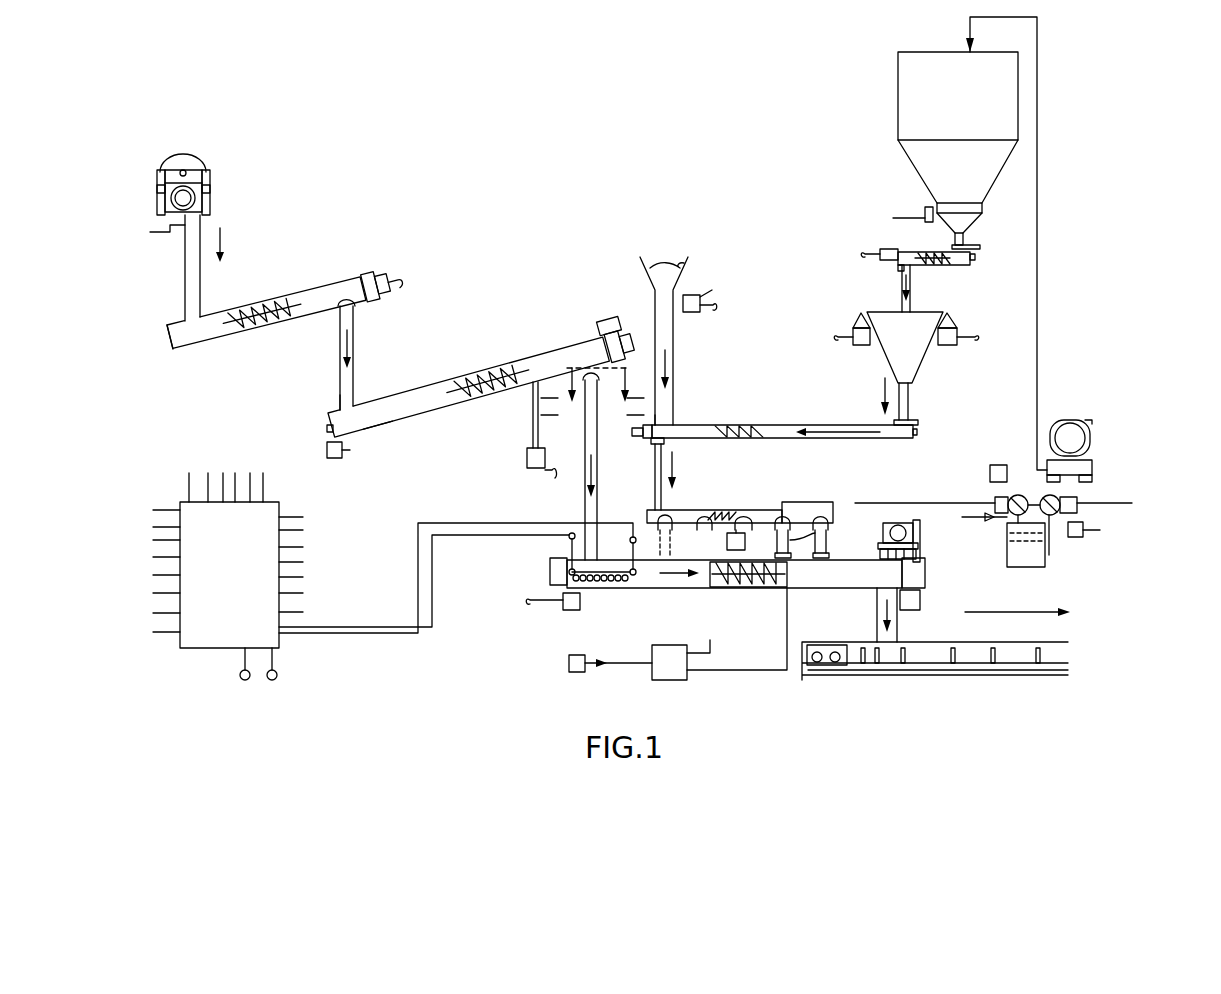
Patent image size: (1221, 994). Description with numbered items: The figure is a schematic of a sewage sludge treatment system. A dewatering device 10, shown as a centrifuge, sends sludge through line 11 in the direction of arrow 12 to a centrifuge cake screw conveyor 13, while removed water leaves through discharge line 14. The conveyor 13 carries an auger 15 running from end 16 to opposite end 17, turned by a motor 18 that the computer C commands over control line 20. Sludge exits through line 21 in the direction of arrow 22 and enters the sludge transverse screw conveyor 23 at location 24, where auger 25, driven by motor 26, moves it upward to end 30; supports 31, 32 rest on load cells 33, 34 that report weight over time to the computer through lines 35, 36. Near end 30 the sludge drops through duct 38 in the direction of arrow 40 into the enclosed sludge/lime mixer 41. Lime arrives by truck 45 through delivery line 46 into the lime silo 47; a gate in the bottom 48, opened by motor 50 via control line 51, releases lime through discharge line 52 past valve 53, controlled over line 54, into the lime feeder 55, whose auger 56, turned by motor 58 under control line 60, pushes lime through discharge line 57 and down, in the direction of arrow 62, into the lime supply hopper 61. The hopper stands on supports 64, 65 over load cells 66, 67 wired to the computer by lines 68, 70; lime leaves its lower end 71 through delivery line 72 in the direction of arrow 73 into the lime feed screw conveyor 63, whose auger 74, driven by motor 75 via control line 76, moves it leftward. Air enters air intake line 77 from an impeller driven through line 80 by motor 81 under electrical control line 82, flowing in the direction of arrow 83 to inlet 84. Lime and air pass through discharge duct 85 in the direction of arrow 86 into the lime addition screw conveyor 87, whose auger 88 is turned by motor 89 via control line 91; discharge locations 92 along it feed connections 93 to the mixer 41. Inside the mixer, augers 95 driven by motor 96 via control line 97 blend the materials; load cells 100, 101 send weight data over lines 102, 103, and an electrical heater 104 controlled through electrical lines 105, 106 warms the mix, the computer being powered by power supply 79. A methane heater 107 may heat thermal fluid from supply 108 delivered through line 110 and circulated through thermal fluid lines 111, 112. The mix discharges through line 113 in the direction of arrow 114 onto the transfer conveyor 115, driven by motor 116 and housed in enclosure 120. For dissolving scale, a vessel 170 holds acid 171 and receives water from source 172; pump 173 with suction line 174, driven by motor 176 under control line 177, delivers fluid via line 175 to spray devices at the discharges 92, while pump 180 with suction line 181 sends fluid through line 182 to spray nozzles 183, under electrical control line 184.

The dewatering device 10 is at (218, 167).
The line 11 is at (204, 234).
The arrow 12 is at (226, 240).
The centrifuge cake screw conveyor 13 is at (265, 314).
The discharge line 14 is at (152, 232).
The auger 15 is at (262, 313).
The end 16 is at (166, 330).
The opposite end 17 is at (370, 287).
The motor 18 is at (382, 284).
The control line 20 is at (395, 284).
The line 21 is at (355, 327).
The arrow 22 is at (350, 350).
The sludge transverse screw conveyor 23 is at (472, 366).
The location 24 is at (343, 400).
The auger 25 is at (487, 381).
The motor 26 is at (609, 325).
The end 30 is at (620, 345).
The support 31 is at (378, 425).
The support 32 is at (533, 410).
The load cell 33 is at (343, 455).
The load cell 34 is at (528, 455).
The electrical information communication line 35 is at (333, 442).
The electrical information communication line 36 is at (540, 476).
The duct 38 is at (583, 492).
The arrow 40 is at (598, 470).
The sludge/lime mixer 41 is at (620, 588).
The truck 45 is at (1070, 420).
The delivery line 46 is at (1037, 290).
The lime silo 47 is at (898, 90).
The bottom 48 is at (975, 216).
The motor 50 is at (928, 206).
The control line 51 is at (895, 216).
The discharge line 52 is at (965, 238).
The valve 53 is at (980, 249).
The control line 54 is at (980, 247).
The lime feeder 55 is at (935, 256).
The auger 56 is at (900, 266).
The lime feeder discharge line 57 is at (902, 282).
The motor 58 is at (882, 255).
The control line 60 is at (862, 252).
The lime supply hopper 61 is at (922, 312).
The arrow 62 is at (902, 296).
The lime feed screw conveyor 63 is at (774, 420).
The support 64 is at (957, 320).
The support 65 is at (858, 320).
The load cell 66 is at (985, 334).
The load cell 67 is at (855, 343).
The electrical information delivery line 68 is at (985, 340).
The electrical information delivery line 70 is at (836, 338).
The lower end 71 is at (910, 390).
The delivery line 72 is at (920, 422).
The arrow 73 is at (880, 392).
The auger 74 is at (752, 440).
The motor 75 is at (630, 368).
The control line 76 is at (645, 438).
The air intake line 77 is at (673, 352).
The power supply 79 is at (240, 675).
The line 80 is at (702, 296).
The motor 81 is at (700, 300).
The electrical control line 82 is at (716, 306).
The arrow 83 is at (670, 366).
The inlet 84 is at (675, 420).
The discharge duct 85 is at (667, 443).
The arrow 86 is at (668, 463).
The lime addition screw conveyor 87 is at (658, 510).
The auger 88 is at (712, 520).
The motor 89 is at (745, 541).
The control line 91 is at (727, 540).
The discharge locations 92 is at (647, 516).
The connections 93 is at (743, 617).
The augers 95 is at (788, 588).
The motor 96 is at (921, 530).
The control line 97 is at (886, 503).
The load cell 100 is at (563, 608).
The load cell 101 is at (910, 610).
The electrical information delivery line 102 is at (527, 600).
The electrical information delivery line 103 is at (920, 598).
The electrical heater 104 is at (563, 560).
The electrical line 105 is at (418, 523).
The electrical line 106 is at (420, 590).
The methane heater 107 is at (668, 680).
The thermal fluid supply 108 is at (569, 663).
The delivery line 110 is at (595, 657).
The thermal fluid line 111 is at (712, 648).
The thermal fluid line 112 is at (775, 670).
The discharge line 113 is at (877, 622).
The arrow 114 is at (883, 605).
The transfer conveyor 115 is at (919, 685).
The motor 116 is at (1012, 642).
The enclosure 120 is at (962, 642).
The vessel 170 is at (1052, 553).
The acid 171 is at (1030, 566).
The source of water 172 is at (968, 519).
The pump 173 is at (1015, 497).
The suction line 174 is at (1008, 555).
The line 175 is at (877, 510).
The motor 176 is at (995, 500).
The electrical control line 177 is at (990, 475).
The pump 180 is at (1058, 496).
The suction line 181 is at (1048, 566).
The line 182 is at (1125, 503).
The spray nozzles 183 is at (1100, 530).
The electrical control line 184 is at (1085, 531).